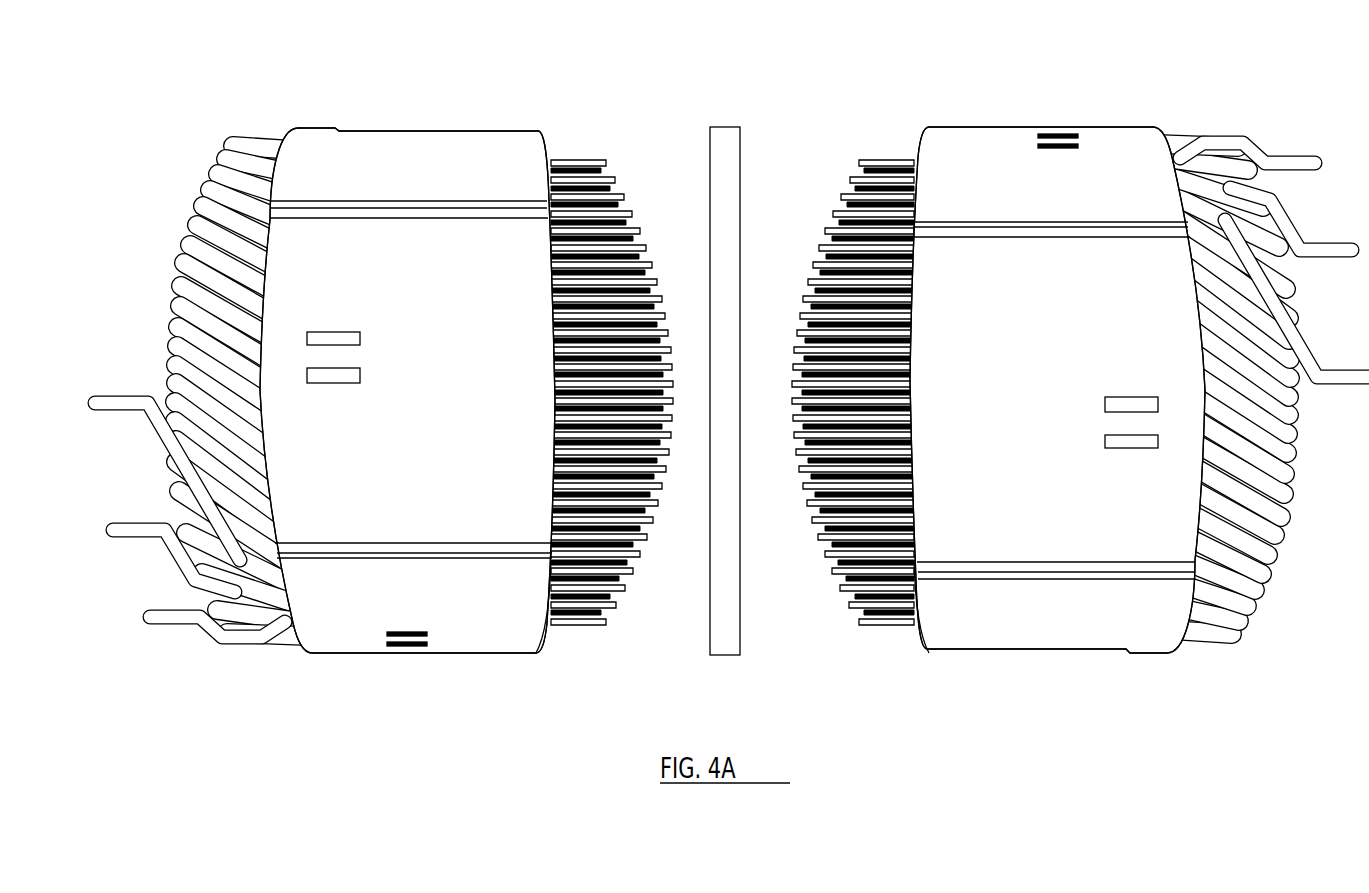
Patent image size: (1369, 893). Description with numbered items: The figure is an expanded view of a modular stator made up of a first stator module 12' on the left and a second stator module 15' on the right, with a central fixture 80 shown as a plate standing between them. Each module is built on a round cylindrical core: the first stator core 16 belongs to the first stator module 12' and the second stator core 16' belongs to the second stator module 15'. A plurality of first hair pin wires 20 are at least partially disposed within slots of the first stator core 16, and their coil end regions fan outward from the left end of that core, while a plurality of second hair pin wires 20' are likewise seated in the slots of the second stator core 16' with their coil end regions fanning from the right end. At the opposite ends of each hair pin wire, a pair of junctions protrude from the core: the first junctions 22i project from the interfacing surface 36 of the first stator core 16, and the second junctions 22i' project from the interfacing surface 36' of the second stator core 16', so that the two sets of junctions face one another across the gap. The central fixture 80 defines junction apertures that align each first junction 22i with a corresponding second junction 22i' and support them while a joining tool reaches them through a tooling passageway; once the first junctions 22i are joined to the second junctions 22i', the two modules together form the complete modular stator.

The first stator module 12' is at (407, 330).
The second stator module 15' is at (1057, 330).
The central fixture 80 is at (724, 127).
The first hair pin wires 20 is at (201, 391).
The second hair pin wires 20' is at (1263, 388).
The first junctions 22i is at (623, 366).
The second junctions 22i' is at (840, 379).
The first stator core 16 is at (407, 421).
The second stator core 16' is at (1057, 420).
The interfacing surface 36 is at (569, 614).
The interfacing surface 36' is at (895, 613).